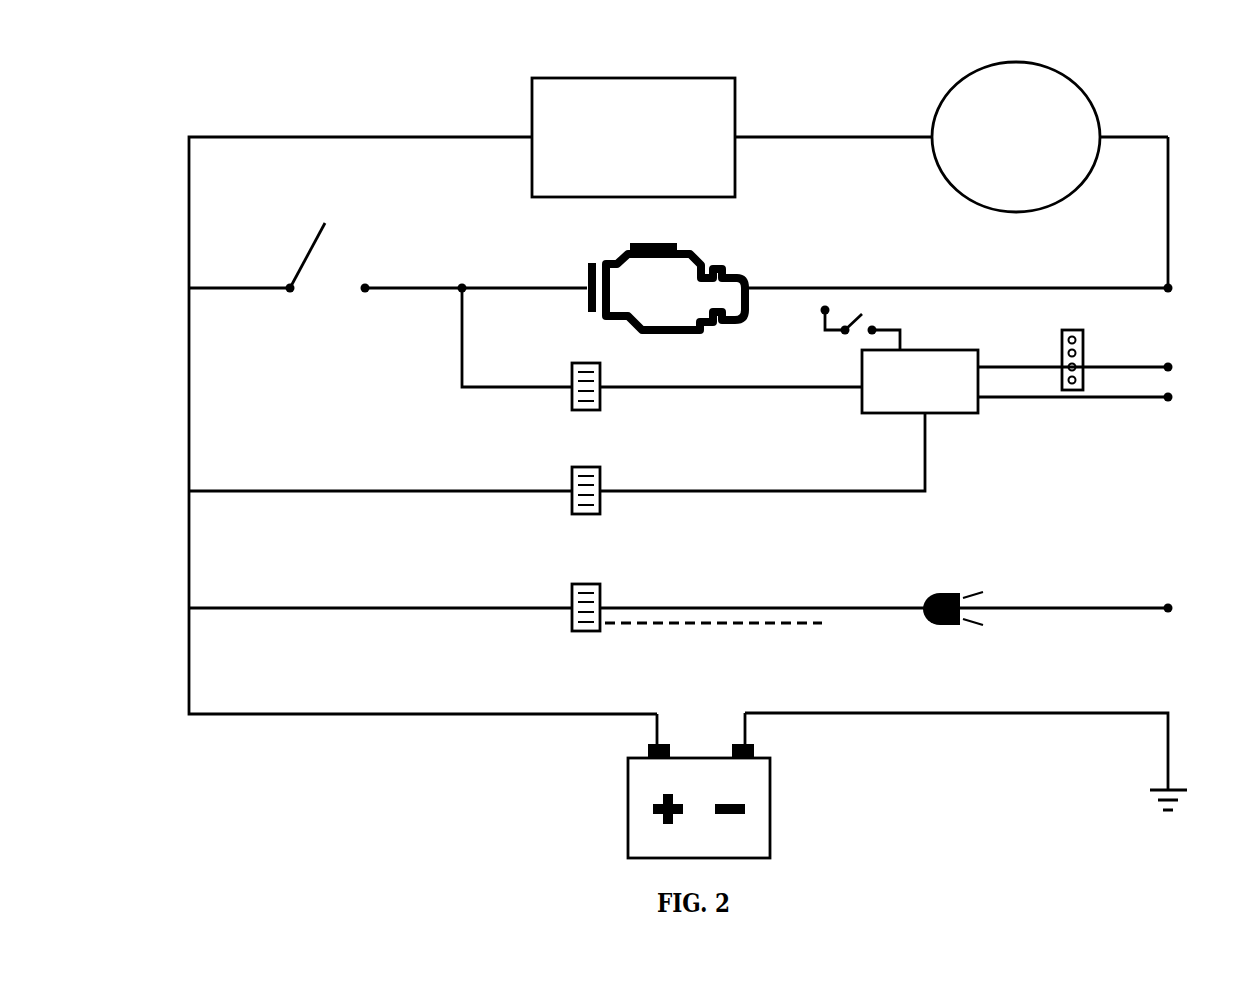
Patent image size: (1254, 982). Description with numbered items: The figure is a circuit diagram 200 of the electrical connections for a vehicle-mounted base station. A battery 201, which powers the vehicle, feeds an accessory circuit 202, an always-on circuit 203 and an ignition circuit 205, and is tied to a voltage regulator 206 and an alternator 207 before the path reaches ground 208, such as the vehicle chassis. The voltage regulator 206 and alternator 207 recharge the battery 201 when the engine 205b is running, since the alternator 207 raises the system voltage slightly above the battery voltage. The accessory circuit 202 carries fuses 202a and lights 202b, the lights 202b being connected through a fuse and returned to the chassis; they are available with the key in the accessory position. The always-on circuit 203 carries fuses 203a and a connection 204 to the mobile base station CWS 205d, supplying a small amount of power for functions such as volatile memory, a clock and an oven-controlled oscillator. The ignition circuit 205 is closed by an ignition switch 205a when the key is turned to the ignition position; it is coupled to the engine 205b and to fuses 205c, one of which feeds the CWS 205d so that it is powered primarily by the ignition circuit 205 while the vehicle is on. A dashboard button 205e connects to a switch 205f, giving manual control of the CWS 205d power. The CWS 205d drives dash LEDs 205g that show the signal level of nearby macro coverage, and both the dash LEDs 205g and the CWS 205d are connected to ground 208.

The circuit diagram 200 is at (171, 123).
The battery 201 is at (627, 808).
The accessory circuit 202 is at (313, 641).
The fuses 202a is at (627, 658).
The lights 202b is at (1022, 663).
The always-on circuit 203 is at (313, 524).
The fuses 203a is at (627, 541).
The connection 204 is at (848, 492).
The ignition circuit 205 is at (285, 353).
The ignition switch 205a is at (300, 252).
The engine 205b is at (735, 266).
The fuses 205c is at (627, 437).
The CWS 205d is at (950, 413).
The button 205e is at (821, 315).
The switch 205f is at (887, 326).
The dashboard LEDs 205g is at (1083, 342).
The voltage regulator 206 is at (633, 78).
The alternator 207 is at (1020, 62).
The ground 208 is at (1175, 788).